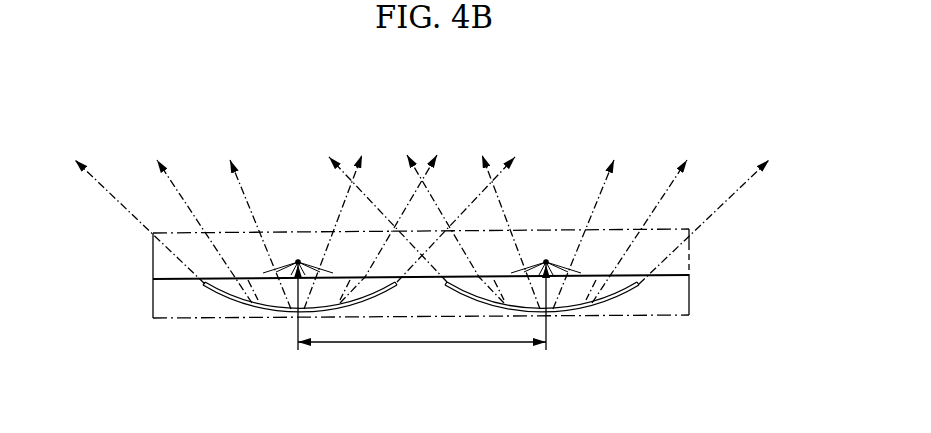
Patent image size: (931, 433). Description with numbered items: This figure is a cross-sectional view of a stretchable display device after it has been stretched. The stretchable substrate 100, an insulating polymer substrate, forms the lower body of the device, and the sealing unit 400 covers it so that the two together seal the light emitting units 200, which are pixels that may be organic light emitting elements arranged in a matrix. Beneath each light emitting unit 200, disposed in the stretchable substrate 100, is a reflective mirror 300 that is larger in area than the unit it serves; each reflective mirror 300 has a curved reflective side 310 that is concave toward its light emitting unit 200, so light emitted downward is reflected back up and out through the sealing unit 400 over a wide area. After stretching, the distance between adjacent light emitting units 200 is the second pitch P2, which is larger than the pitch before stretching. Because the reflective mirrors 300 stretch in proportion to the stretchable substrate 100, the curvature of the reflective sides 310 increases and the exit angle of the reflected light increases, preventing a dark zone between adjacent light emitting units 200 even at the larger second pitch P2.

The stretchable substrate 100 is at (163, 304).
The sealing unit 400 is at (163, 265).
The light emitting unit 200 is at (297, 259).
The reflective mirror 300 is at (253, 313).
The reflective side 310 is at (277, 309).
The second pitch P2 is at (422, 359).